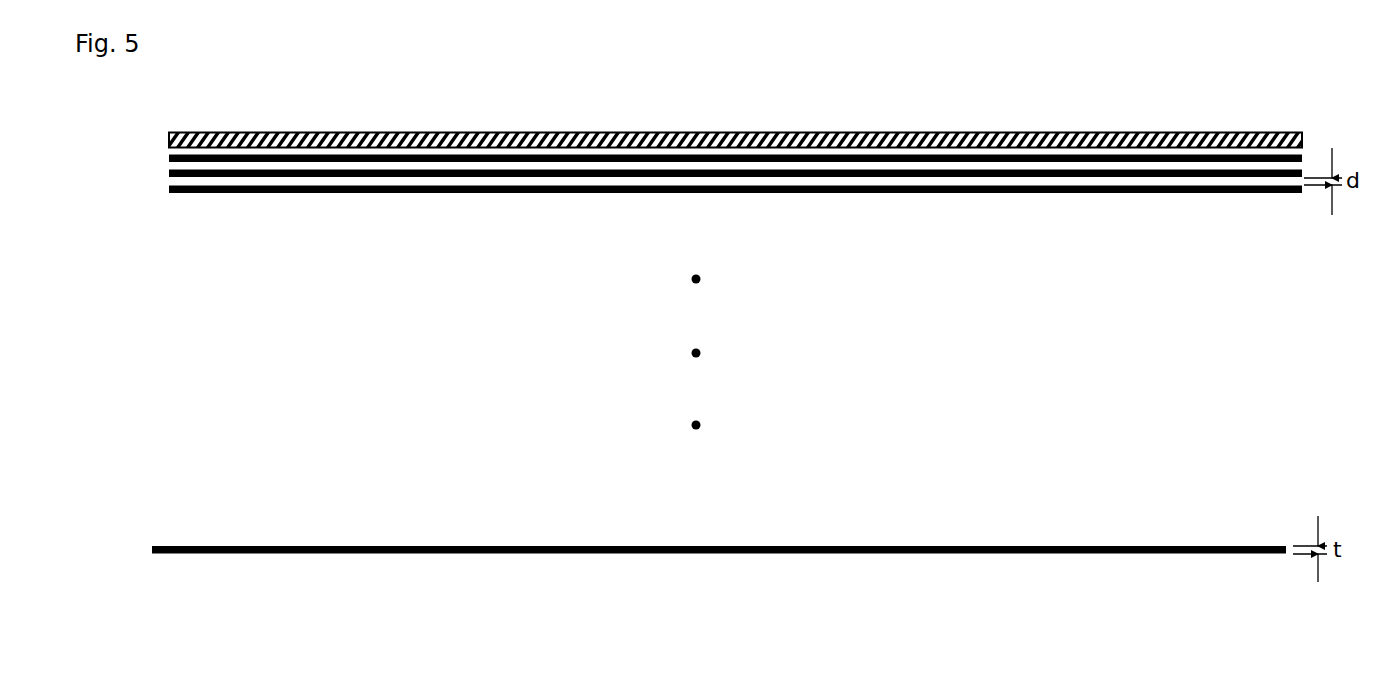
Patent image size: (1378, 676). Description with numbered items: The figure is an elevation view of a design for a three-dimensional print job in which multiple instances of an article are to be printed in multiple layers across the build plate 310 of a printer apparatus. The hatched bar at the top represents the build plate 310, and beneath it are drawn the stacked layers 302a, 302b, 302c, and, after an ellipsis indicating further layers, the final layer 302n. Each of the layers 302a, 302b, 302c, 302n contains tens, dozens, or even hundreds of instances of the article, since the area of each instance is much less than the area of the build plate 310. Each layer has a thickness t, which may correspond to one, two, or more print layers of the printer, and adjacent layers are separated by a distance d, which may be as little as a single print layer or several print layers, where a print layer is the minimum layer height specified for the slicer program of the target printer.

The build plate 310 is at (932, 140).
The layer 302a is at (169, 162).
The layer 302b is at (169, 177).
The layer 302c is at (169, 193).
The layer 302n is at (152, 553).